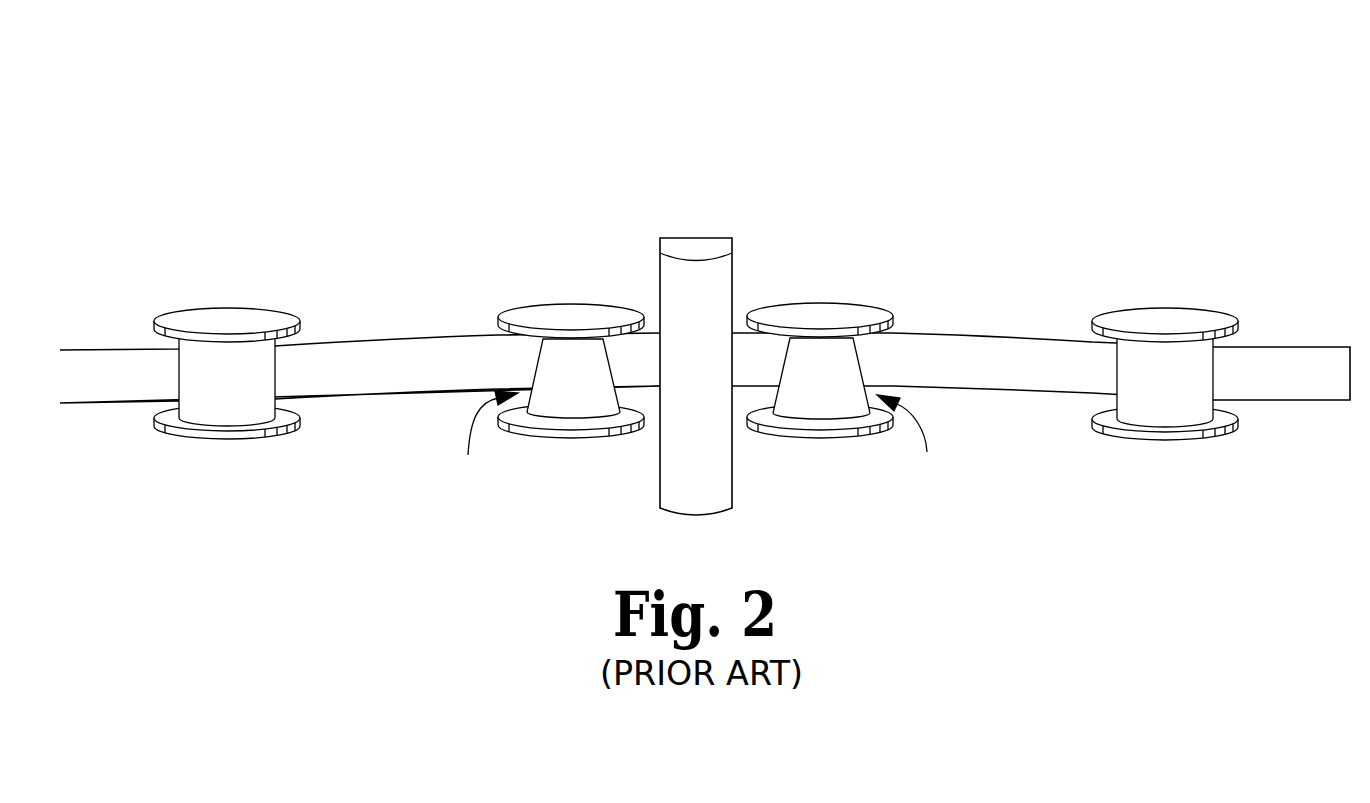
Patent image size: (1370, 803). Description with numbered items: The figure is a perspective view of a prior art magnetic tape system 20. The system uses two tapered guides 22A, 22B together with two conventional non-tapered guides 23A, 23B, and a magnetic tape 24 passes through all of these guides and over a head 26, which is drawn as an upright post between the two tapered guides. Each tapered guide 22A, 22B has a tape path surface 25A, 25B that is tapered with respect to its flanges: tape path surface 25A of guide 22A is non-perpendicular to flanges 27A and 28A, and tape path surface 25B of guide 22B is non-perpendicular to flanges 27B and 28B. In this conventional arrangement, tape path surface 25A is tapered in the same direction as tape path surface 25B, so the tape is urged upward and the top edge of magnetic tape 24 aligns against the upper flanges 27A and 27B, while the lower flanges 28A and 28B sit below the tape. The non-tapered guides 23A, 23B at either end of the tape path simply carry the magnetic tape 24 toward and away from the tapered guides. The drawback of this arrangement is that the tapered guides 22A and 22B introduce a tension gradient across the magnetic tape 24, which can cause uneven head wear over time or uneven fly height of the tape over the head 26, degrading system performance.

The prior art magnetic tape system 20 is at (890, 92).
The tapered guide 22A is at (547, 303).
The tapered guide 22B is at (853, 303).
The non-tapered guide 23A is at (222, 307).
The non-tapered guide 23B is at (1172, 305).
The magnetic tape 24 is at (372, 380).
The tape path surface 25A is at (480, 440).
The tape path surface 25B is at (918, 441).
The head 26 is at (695, 250).
The flange 27A is at (613, 333).
The flange 27B is at (760, 310).
The flange 28A is at (603, 433).
The flange 28B is at (768, 425).